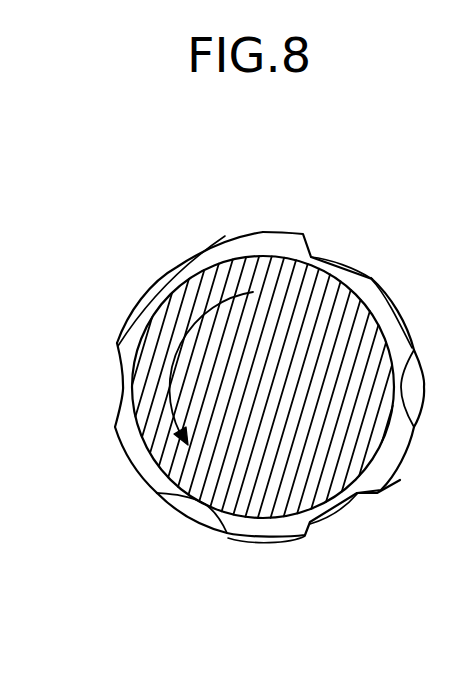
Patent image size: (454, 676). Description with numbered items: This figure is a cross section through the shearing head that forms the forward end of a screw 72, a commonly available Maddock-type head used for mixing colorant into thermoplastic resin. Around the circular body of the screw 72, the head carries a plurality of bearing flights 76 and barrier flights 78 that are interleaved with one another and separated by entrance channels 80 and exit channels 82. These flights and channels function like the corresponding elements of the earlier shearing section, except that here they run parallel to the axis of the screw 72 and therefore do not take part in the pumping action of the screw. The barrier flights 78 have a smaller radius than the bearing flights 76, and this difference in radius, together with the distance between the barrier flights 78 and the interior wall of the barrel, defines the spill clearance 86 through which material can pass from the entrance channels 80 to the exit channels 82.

The screw 72 is at (336, 262).
The bearing flights 76 is at (131, 469).
The barrier flights 78 is at (140, 300).
The entrance channels 80 is at (115, 427).
The exit channels 82 is at (212, 262).
The spill clearance 86 is at (116, 344).